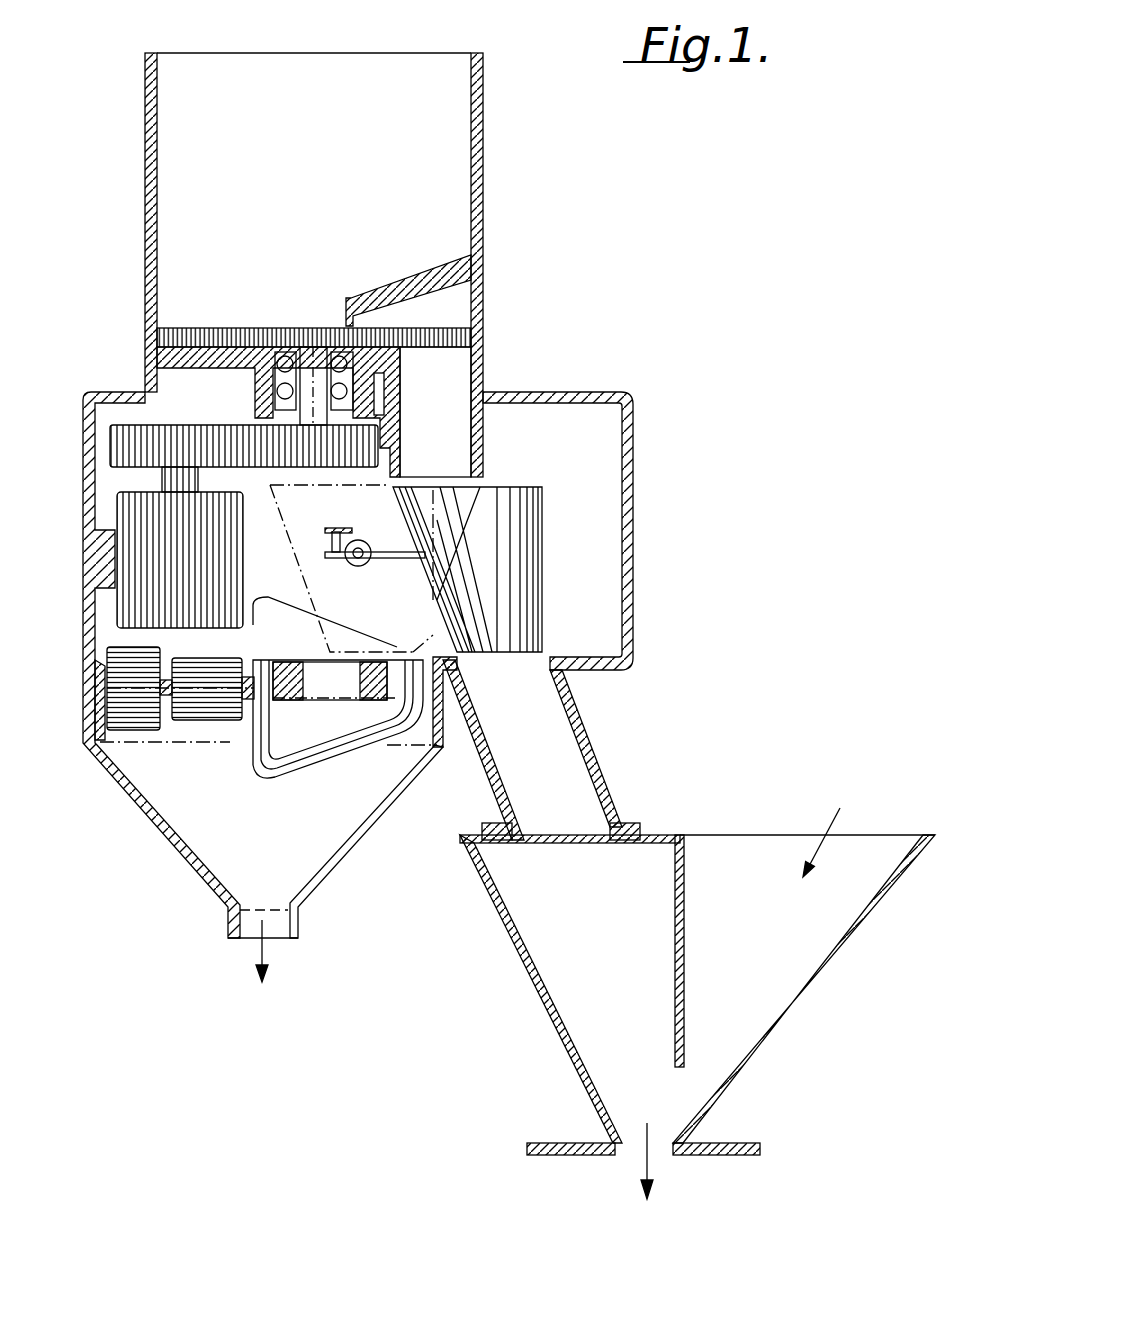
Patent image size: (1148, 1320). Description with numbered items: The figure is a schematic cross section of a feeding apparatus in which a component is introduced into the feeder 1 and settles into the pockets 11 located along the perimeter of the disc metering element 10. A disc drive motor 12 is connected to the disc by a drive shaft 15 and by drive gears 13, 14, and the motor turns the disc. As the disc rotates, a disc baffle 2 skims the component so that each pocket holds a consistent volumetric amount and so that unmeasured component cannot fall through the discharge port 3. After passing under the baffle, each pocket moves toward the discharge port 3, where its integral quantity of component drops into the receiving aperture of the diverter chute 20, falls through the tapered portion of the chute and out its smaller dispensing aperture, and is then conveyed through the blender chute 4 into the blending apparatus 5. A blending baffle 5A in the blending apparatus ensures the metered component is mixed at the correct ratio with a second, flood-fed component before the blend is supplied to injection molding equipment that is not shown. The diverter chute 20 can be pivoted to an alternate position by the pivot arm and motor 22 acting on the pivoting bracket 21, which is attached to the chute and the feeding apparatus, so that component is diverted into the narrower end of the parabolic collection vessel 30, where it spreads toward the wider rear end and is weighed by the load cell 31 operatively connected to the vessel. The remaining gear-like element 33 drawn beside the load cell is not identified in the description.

The feeder 1 is at (484, 176).
The disc baffle 2 is at (403, 285).
The discharge port 3 is at (443, 387).
The blender chute 4 is at (555, 763).
The blending apparatus 5 is at (820, 978).
The blending baffle 5A is at (688, 860).
The disc metering element 10 is at (234, 328).
The pockets 11 is at (335, 338).
The disc drive motor 12 is at (212, 575).
The drive gear 13 is at (175, 437).
The drive gear 14 is at (330, 438).
The drive shaft 15 is at (257, 395).
The diverter chute 20 is at (510, 503).
The pivoting bracket 21 is at (392, 560).
The pivot arm and motor 22 is at (352, 566).
The collection vessel 30 is at (360, 730).
The load cell 31 is at (203, 698).
The gear 33 is at (133, 707).